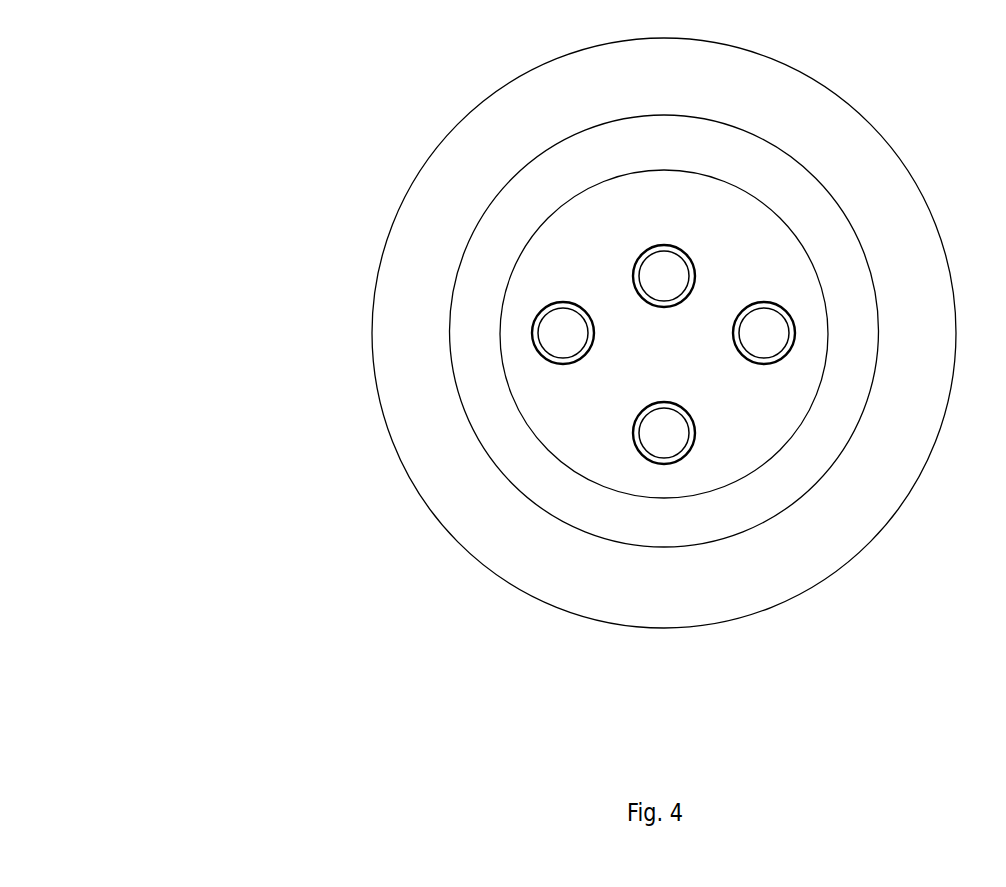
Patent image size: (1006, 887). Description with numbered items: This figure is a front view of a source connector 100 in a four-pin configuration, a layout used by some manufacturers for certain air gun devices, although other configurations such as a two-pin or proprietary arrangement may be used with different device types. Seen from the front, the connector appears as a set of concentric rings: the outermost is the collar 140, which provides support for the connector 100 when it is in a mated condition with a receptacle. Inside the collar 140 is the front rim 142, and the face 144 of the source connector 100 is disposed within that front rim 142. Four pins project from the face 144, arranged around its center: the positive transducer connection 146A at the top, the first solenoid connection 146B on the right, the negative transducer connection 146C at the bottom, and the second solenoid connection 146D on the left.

The source connector 100 is at (160, 426).
The collar 140 is at (472, 502).
The front rim 142 is at (565, 172).
The face 144 is at (567, 250).
The positive transducer connection 146A is at (662, 255).
The first solenoid connection 146B is at (770, 337).
The negative transducer connection 146C is at (660, 423).
The second solenoid connection 146D is at (565, 329).